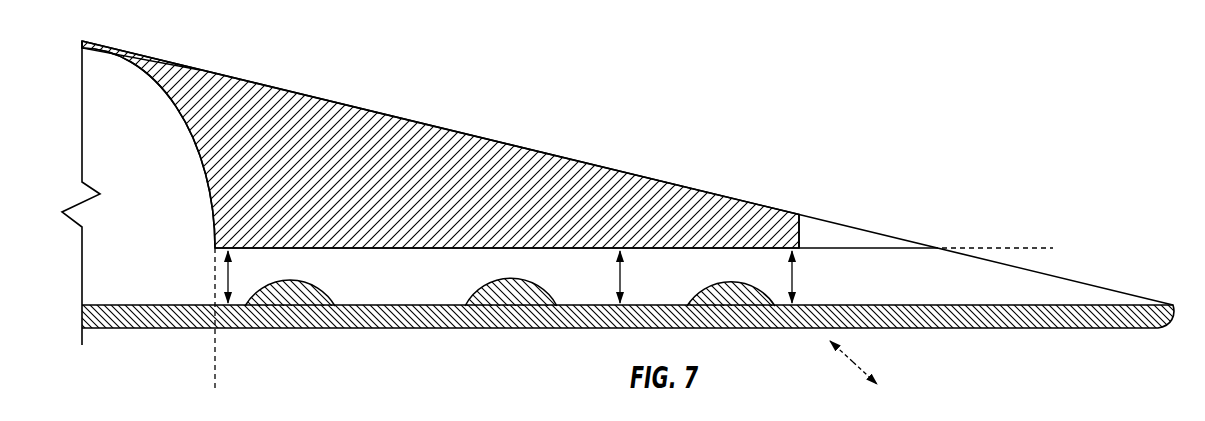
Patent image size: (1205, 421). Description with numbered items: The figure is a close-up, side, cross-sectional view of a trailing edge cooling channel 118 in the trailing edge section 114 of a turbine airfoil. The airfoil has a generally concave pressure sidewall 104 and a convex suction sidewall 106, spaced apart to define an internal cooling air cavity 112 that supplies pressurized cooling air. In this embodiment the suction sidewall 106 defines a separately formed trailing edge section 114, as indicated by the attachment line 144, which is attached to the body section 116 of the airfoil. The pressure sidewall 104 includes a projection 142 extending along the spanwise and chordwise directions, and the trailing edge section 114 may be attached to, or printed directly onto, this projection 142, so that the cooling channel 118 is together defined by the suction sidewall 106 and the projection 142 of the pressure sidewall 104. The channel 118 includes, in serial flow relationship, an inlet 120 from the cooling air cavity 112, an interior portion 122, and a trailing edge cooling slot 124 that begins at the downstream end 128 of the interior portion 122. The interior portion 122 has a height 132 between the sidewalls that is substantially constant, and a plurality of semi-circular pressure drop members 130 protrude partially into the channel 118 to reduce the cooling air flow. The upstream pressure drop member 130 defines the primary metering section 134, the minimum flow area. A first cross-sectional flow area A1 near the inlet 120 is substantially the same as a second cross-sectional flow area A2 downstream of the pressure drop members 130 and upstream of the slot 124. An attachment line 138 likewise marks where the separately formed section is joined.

The pressure sidewall 104 is at (117, 329).
The suction sidewall 106 is at (189, 78).
The cooling air cavity 112 is at (108, 145).
The trailing edge section 114 is at (657, 84).
The body section 116 is at (105, 40).
The trailing edge cooling channel 118 is at (572, 268).
The inlet 120 is at (188, 271).
The interior portion 122 is at (440, 245).
The trailing edge cooling slot 124 is at (1005, 283).
The downstream end 128 is at (812, 258).
The pressure drop members 130 is at (508, 258).
The height 132 is at (618, 276).
The primary metering section 134 is at (290, 265).
The attachment line 138 is at (985, 246).
The projection 142 is at (690, 200).
The attachment line 144 is at (219, 358).
The first cross-sectional flow area A1 is at (231, 278).
The second cross-sectional flow area A2 is at (818, 276).